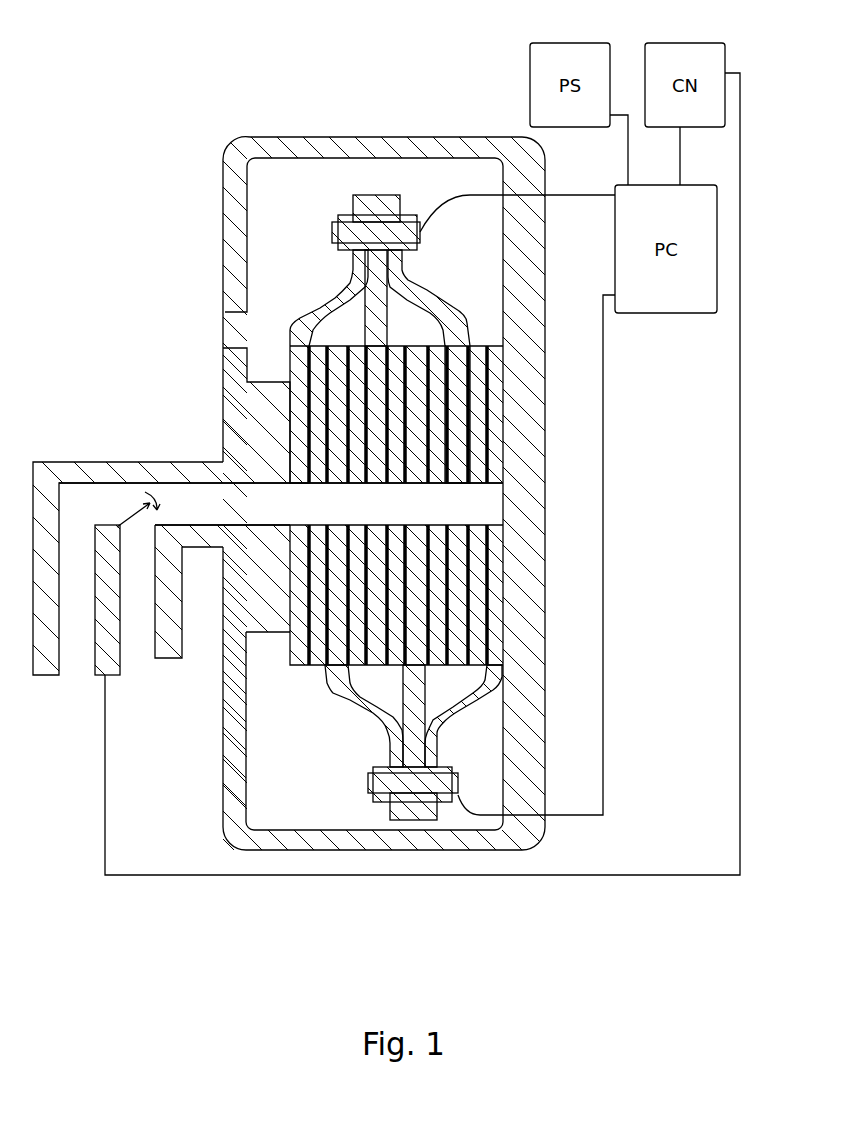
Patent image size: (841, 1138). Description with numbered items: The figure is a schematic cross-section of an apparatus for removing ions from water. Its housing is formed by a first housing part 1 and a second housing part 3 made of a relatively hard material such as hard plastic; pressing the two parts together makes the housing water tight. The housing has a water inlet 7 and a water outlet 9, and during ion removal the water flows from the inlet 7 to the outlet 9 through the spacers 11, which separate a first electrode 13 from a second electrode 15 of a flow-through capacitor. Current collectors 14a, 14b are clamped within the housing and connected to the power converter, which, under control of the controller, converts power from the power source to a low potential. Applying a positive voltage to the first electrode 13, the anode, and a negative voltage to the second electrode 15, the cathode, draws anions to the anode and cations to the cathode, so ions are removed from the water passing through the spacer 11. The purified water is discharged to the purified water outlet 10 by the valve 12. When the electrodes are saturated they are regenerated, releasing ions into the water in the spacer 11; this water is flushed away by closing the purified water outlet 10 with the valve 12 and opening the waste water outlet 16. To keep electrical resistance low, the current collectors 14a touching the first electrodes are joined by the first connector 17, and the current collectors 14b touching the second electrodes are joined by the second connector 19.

The first housing part 1 is at (222, 613).
The second housing part 3 is at (522, 548).
The water inlet 7 is at (224, 338).
The water outlet 9 is at (281, 504).
The purified water outlet 10 is at (139, 672).
The spacer 11 is at (450, 346).
The valve 12 is at (107, 525).
The first electrode 13 is at (300, 330).
The current collector 14a is at (366, 194).
The current collector 14b is at (445, 767).
The second electrode 15 is at (440, 346).
The waste water outlet 16 is at (73, 685).
The first connector 17 is at (336, 233).
The second connector 19 is at (368, 783).